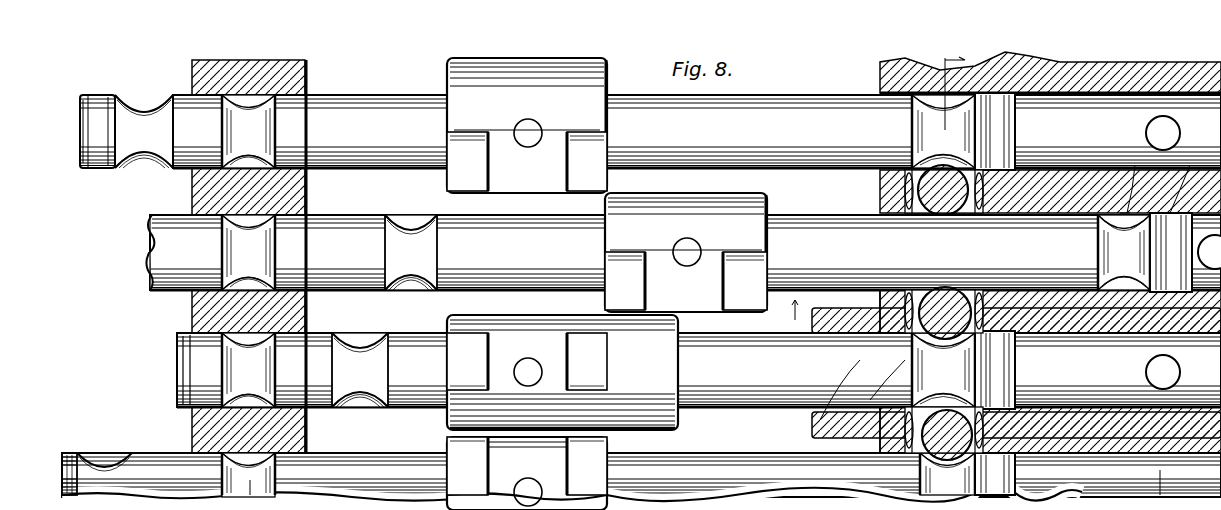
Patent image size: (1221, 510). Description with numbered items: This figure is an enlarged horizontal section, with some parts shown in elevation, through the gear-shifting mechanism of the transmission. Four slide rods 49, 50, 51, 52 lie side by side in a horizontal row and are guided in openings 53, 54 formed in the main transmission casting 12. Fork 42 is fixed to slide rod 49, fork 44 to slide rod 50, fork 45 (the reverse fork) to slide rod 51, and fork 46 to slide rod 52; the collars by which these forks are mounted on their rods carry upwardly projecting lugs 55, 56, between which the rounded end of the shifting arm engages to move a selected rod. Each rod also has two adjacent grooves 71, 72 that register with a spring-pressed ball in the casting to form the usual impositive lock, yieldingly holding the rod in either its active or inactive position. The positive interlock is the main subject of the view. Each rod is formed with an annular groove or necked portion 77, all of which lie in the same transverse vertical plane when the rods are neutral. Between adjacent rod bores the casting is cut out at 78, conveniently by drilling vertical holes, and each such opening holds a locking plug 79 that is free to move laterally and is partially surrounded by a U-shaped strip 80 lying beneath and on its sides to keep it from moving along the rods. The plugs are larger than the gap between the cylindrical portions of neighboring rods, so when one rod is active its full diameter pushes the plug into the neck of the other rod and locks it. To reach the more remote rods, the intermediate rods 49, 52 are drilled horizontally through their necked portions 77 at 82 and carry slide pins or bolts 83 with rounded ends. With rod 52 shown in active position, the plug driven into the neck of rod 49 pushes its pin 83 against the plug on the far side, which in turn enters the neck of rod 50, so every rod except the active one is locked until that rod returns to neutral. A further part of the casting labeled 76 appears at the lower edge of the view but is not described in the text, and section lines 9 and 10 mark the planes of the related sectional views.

The section line 9 is at (948, 83).
The section line 10 is at (785, 311).
The main transmission casting 12 is at (1162, 490).
The fork 42 is at (562, 372).
The fork 44 is at (527, 473).
The fork 45 is at (527, 125).
The fork 46 is at (686, 252).
The slide rod 49 is at (699, 370).
The slide rod 50 is at (785, 478).
The slide rod 51 is at (697, 131).
The slide rod 52 is at (683, 252).
The opening 53 is at (193, 102).
The opening 54 is at (1151, 257).
The lug 55 is at (466, 134).
The lug 56 is at (590, 138).
The groove 71 is at (144, 108).
The groove 72 is at (262, 126).
The support 76 is at (250, 495).
The annular groove or necked portion 77 is at (910, 122).
The cut-out 78 is at (926, 240).
The locking plug 79 is at (907, 192).
The U-shaped strip 80 is at (970, 201).
The bore 82 is at (908, 366).
The slide pin or bolt 83 is at (800, 430).